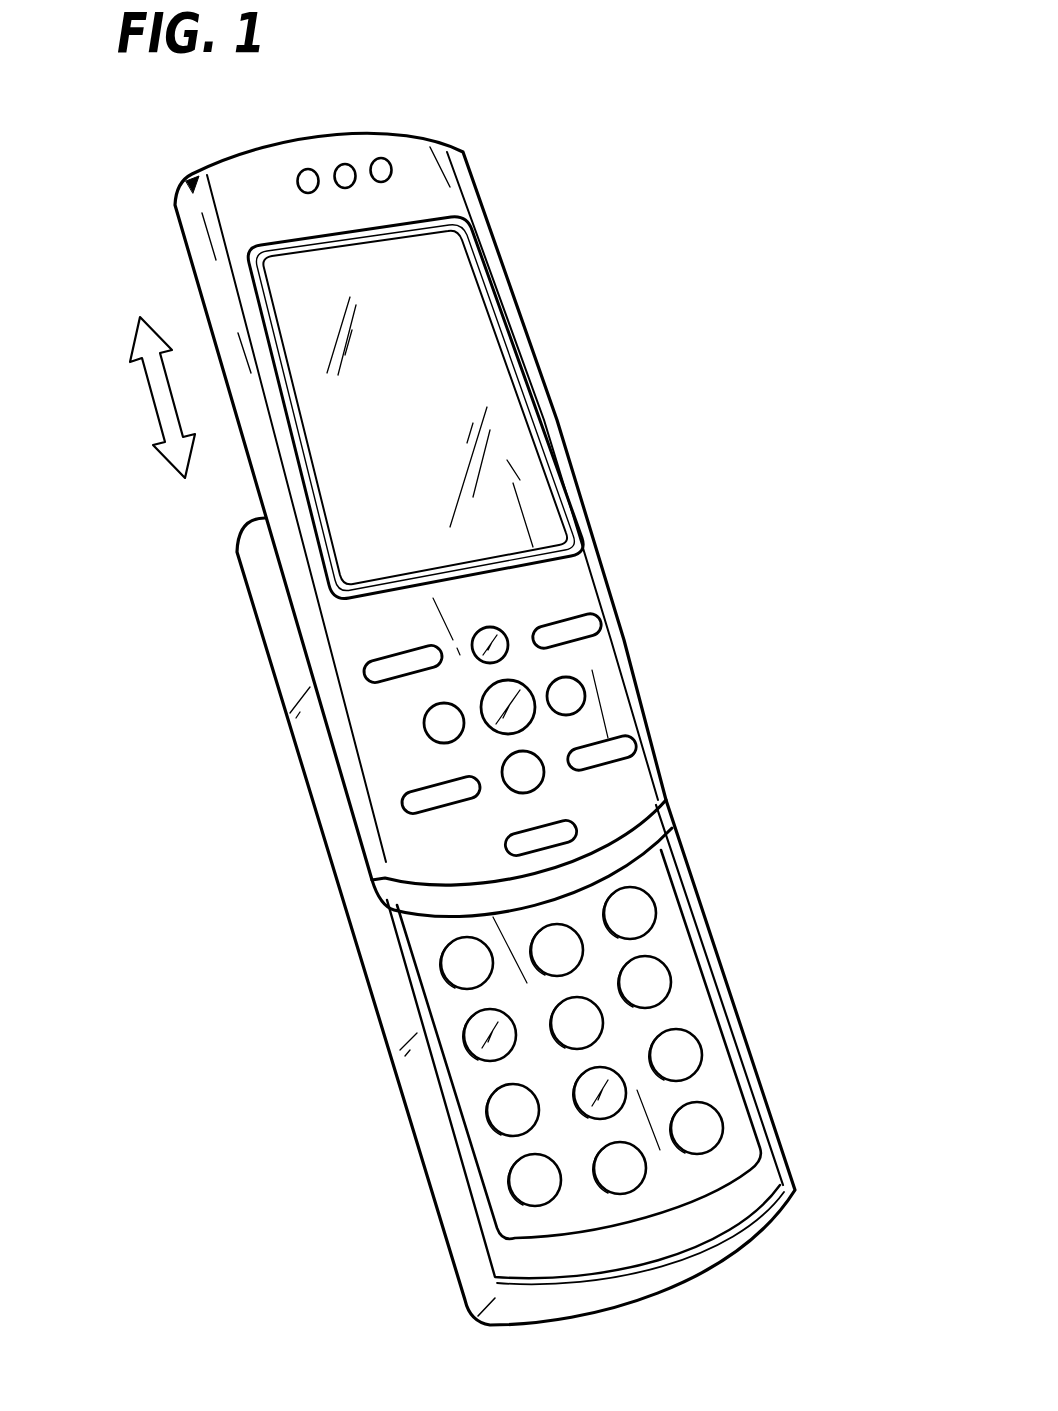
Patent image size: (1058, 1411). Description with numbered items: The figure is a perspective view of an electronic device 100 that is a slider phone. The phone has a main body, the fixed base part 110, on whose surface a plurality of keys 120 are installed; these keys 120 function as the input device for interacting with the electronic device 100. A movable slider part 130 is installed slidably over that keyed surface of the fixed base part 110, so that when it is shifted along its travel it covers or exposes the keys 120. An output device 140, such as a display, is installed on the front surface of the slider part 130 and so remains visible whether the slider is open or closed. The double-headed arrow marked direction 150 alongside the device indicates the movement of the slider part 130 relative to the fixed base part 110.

The electronic device 100 is at (788, 23).
The fixed base part 110 is at (750, 1098).
The keys 120 is at (665, 973).
The slider part 130 is at (614, 688).
The output device 140 is at (475, 373).
The direction 150 is at (163, 398).